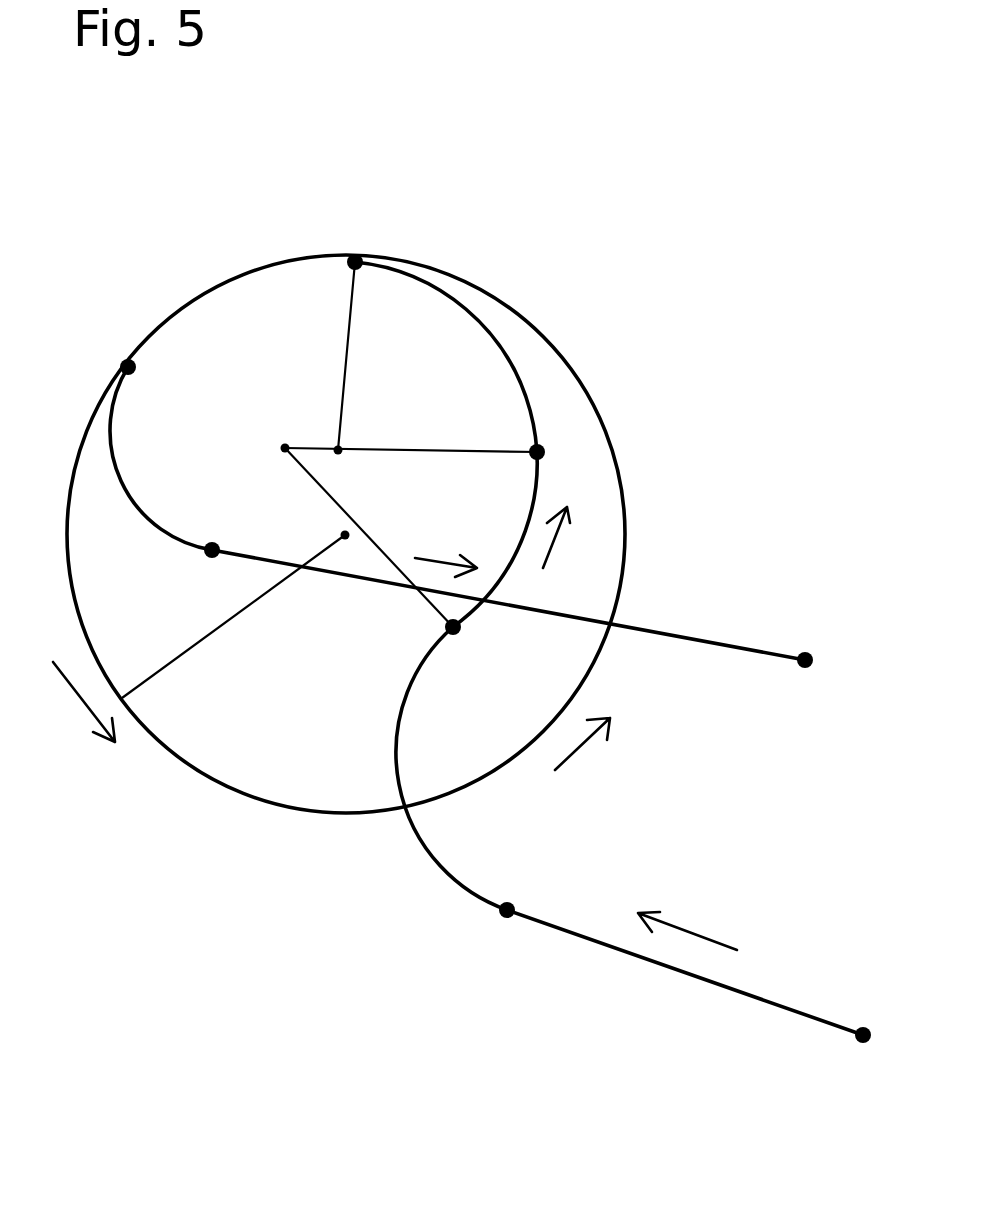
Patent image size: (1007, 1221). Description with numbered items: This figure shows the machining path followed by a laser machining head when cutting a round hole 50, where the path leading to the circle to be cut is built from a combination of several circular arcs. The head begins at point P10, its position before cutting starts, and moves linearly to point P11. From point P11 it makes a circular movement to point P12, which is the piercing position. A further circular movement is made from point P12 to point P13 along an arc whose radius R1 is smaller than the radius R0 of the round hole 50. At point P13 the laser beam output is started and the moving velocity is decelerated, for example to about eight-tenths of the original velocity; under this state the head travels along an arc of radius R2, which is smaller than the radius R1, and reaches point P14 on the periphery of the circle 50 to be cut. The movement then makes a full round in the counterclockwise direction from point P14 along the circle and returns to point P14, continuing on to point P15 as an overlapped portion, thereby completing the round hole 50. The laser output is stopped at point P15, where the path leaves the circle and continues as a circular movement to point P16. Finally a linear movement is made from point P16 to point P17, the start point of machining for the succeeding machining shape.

The round hole 50 is at (552, 343).
The radius of the round hole R0 is at (236, 615).
The radius of the circular arc from P12 to P13 R1 is at (325, 491).
The radius of the circular arc from P13 to P14 R2 is at (411, 358).
The machining head start position P10 is at (863, 1030).
The end point of linear movement P11 is at (508, 908).
The piercing position P12 is at (456, 632).
The laser output start point P13 is at (534, 450).
The point on the periphery of the round hole P14 is at (355, 260).
The laser output stop point P15 is at (126, 366).
The end point of circular movement after leaving circle P16 is at (212, 548).
The start point of succeeding machining shape P17 is at (805, 658).